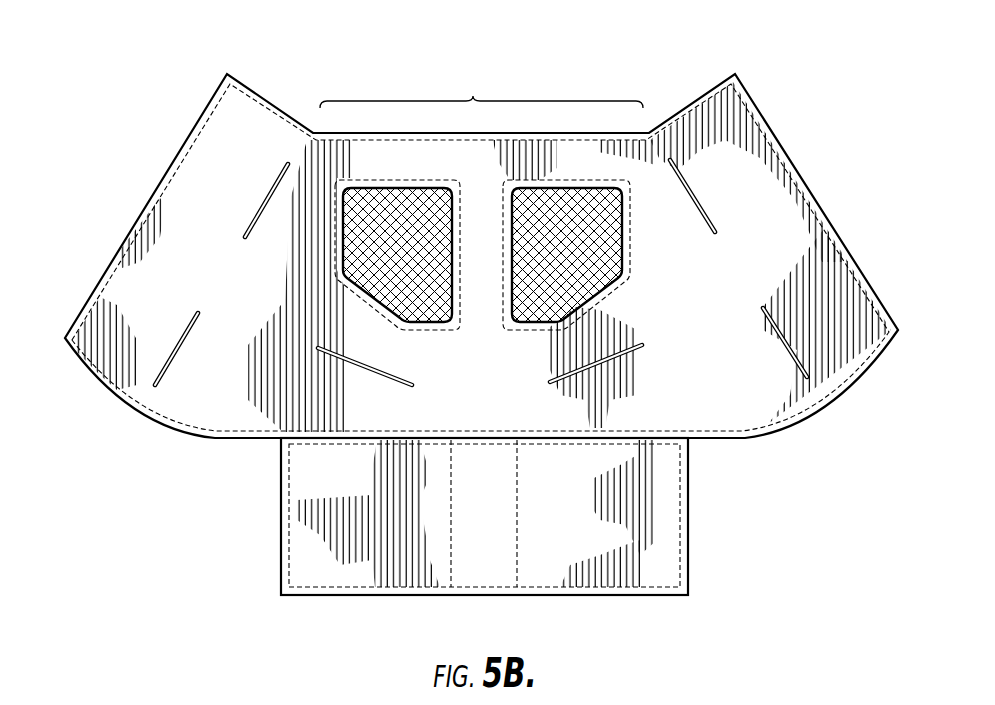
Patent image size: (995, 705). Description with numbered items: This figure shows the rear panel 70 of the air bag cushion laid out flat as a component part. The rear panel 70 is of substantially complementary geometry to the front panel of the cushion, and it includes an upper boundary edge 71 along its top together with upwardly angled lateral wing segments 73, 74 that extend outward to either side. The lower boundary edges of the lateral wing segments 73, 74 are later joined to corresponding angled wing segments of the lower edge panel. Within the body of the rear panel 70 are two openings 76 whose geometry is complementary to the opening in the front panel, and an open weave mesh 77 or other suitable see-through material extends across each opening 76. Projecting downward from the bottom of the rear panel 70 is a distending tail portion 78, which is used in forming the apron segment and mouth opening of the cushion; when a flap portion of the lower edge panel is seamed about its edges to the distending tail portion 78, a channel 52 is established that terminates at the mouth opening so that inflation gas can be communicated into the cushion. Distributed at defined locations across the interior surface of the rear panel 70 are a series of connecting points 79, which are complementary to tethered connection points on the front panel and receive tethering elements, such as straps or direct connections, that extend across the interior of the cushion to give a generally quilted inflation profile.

The rear panel 70 is at (481, 233).
The upper boundary edge 71 is at (481, 85).
The lateral wing segment 73 is at (215, 247).
The lateral wing segment 74 is at (692, 248).
The opening 76 is at (468, 258).
The open weave mesh 77 is at (414, 224).
The distending tail portion 78 is at (507, 516).
The channel 52 is at (461, 540).
The connecting points 79 is at (480, 247).